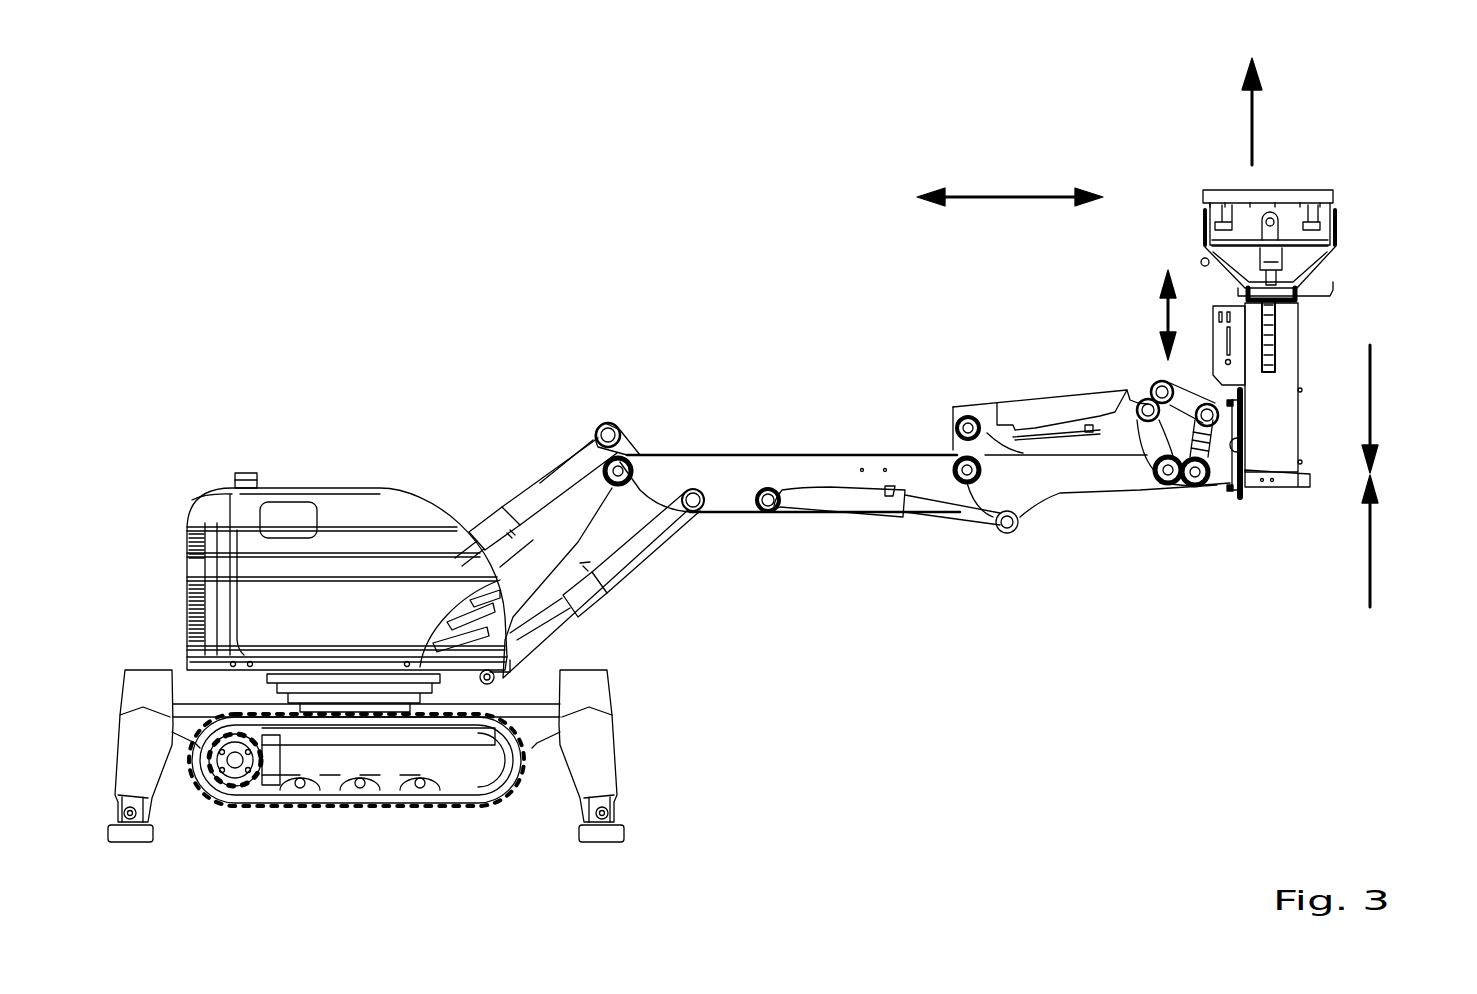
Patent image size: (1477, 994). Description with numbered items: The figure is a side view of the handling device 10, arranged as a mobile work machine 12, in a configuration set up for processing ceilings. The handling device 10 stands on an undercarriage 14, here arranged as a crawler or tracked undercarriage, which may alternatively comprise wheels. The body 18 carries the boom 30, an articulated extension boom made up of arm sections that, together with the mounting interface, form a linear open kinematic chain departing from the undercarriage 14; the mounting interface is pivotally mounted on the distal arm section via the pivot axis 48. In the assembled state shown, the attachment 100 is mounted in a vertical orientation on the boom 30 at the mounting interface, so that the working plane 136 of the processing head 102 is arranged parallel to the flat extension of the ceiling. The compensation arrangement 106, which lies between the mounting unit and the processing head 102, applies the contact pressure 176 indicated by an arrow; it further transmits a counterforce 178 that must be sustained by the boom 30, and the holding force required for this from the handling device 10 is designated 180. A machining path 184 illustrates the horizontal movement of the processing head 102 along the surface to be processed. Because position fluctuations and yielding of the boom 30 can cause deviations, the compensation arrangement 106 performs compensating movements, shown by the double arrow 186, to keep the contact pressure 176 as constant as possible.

The handling device 10 is at (298, 338).
The mobile work machine 12 is at (382, 440).
The undercarriage 14 is at (420, 815).
The body 18 is at (421, 507).
The boom 30 is at (754, 452).
The pivot axis 48 is at (1168, 487).
The attachment 100 is at (1222, 525).
The processing head 102 is at (1345, 193).
The compensation arrangement 106 is at (1310, 428).
The working plane 136 is at (1288, 190).
The contact pressure 176 is at (1245, 133).
The counterforce 178 is at (1371, 392).
The holding force 180 is at (1370, 565).
The machining path 184 is at (1030, 195).
The compensating movement 186 is at (1163, 312).